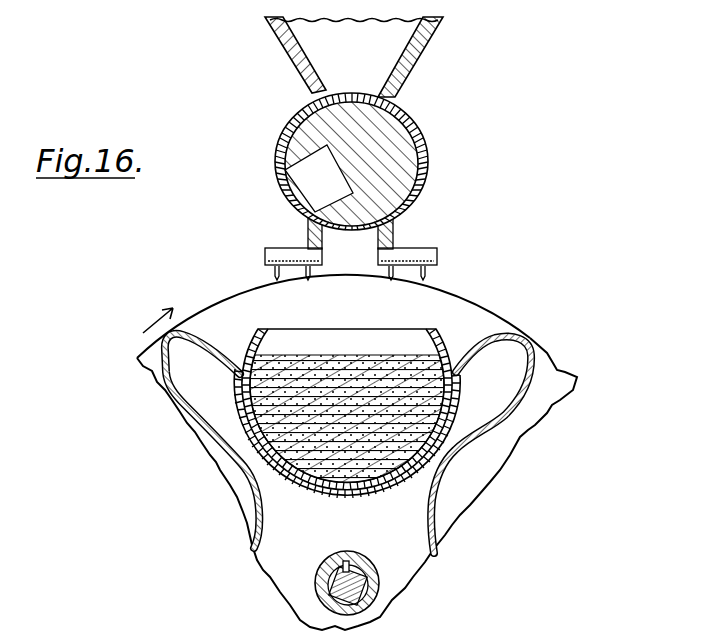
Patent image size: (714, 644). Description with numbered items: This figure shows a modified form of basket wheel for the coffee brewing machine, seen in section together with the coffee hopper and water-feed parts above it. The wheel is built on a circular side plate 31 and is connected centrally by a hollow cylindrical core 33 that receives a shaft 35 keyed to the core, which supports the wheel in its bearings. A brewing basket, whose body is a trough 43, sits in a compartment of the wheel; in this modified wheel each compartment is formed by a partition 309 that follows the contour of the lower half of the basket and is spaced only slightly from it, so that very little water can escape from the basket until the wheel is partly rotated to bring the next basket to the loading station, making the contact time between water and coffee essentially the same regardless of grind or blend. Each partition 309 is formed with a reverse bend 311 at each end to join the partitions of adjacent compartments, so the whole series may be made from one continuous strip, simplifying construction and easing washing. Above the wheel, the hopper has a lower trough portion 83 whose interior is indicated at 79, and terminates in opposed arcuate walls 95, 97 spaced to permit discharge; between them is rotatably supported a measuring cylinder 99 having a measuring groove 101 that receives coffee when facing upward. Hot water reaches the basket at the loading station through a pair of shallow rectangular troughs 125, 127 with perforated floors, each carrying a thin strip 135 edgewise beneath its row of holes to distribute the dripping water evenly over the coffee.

The circular side plate 31 is at (556, 374).
The hollow cylindrical core 33 is at (377, 566).
The shaft 35 is at (333, 579).
The trough 43 is at (440, 366).
The hopper 79 is at (360, 56).
The lower trough portion 83 is at (411, 34).
The arcuate wall 95 is at (290, 130).
The arcuate wall 97 is at (422, 130).
The cylinder 99 is at (400, 158).
The measuring groove 101 is at (305, 163).
The trough 125 is at (290, 250).
The trough 127 is at (410, 257).
The thin strip 135 is at (270, 272).
The partition 309 is at (264, 527).
The reverse bend 311 is at (212, 348).